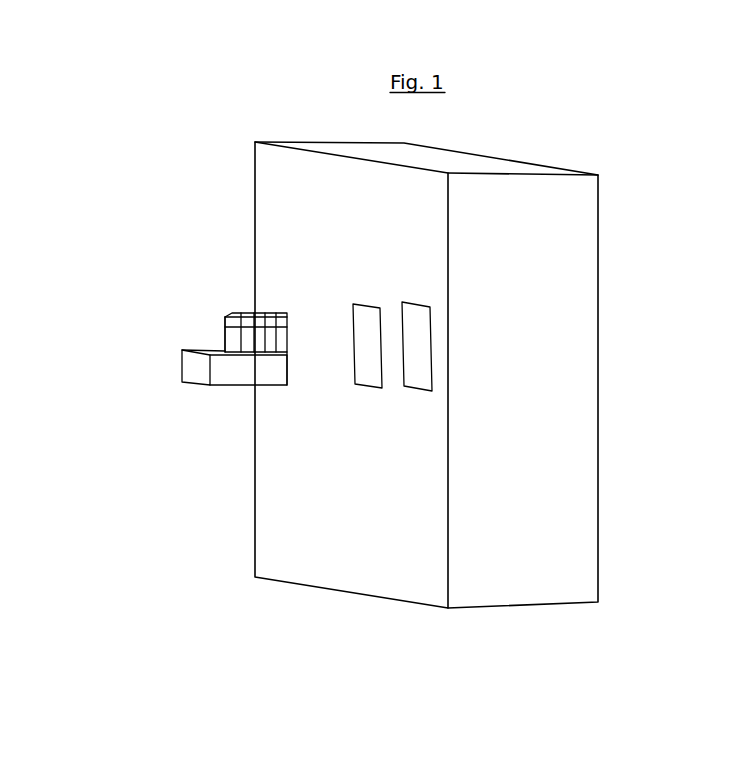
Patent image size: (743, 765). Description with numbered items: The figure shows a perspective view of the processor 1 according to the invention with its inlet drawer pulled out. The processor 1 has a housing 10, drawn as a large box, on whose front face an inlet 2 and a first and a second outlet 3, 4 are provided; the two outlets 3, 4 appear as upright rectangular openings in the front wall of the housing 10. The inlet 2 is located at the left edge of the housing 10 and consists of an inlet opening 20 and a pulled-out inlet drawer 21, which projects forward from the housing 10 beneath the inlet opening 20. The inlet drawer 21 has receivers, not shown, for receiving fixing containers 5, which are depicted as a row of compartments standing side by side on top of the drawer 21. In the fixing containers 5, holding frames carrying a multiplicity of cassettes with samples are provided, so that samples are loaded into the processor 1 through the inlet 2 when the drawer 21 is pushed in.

The processor 1 is at (214, 140).
The housing 10 is at (550, 337).
The first outlet 3 is at (342, 287).
The second outlet 4 is at (452, 377).
The inlet 2 is at (194, 403).
The inlet opening 20 is at (283, 312).
The fixing containers 5 is at (246, 315).
The inlet drawer 21 is at (236, 378).